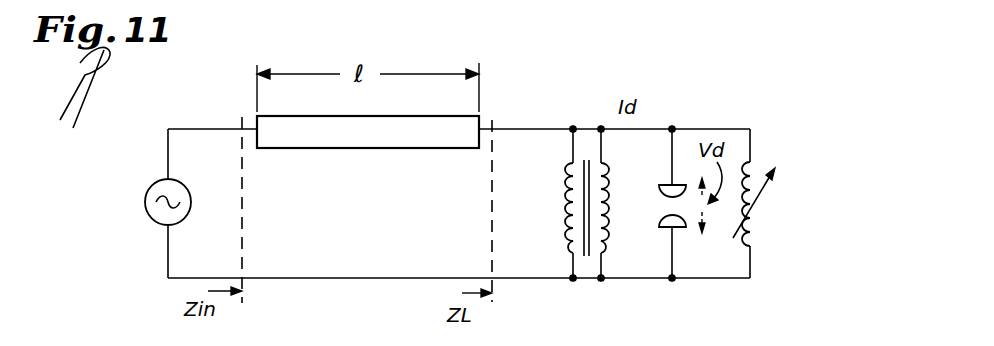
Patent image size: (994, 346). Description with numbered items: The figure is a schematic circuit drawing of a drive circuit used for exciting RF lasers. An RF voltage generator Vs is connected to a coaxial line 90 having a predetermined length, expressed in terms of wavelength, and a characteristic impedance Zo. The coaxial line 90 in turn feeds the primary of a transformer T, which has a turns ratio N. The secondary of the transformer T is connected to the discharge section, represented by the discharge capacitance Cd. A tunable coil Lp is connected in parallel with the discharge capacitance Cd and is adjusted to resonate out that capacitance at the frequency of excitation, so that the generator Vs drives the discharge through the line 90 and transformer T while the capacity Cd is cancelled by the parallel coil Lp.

The coaxial line 90 is at (257, 118).
The voltage generator Vs is at (181, 202).
The transformer T is at (568, 216).
The discharge capacitance Cd is at (655, 203).
The tunable coil Lp is at (764, 203).